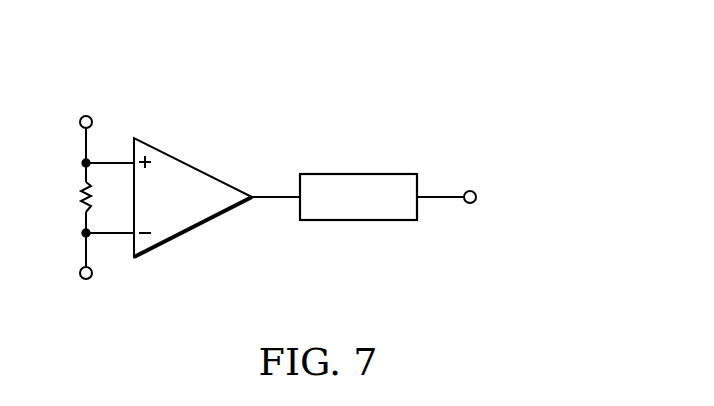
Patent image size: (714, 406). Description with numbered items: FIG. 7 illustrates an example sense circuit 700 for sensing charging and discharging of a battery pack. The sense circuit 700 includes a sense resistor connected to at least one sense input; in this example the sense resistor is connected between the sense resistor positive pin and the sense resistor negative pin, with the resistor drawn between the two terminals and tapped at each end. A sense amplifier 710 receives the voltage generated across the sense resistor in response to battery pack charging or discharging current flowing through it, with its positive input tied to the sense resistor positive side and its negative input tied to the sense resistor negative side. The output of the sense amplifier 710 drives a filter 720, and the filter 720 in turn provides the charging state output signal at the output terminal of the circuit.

The sense circuit 700 is at (290, 88).
The sense amplifier 710 is at (192, 165).
The filter 720 is at (357, 174).